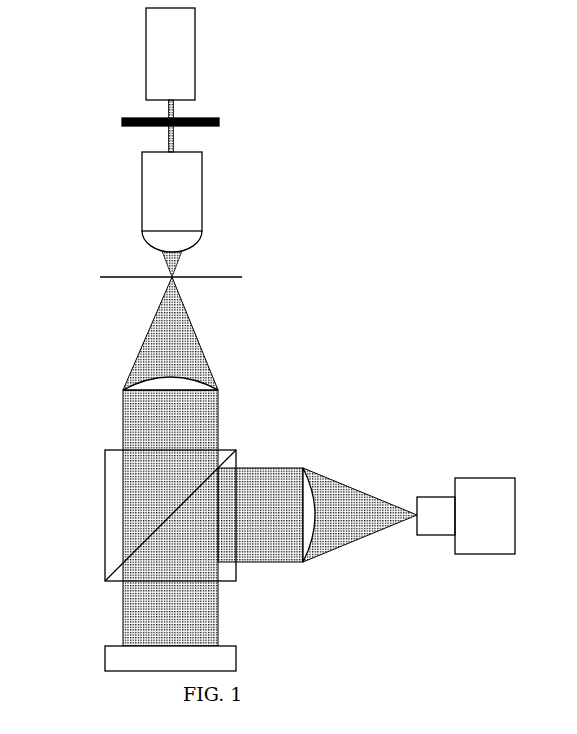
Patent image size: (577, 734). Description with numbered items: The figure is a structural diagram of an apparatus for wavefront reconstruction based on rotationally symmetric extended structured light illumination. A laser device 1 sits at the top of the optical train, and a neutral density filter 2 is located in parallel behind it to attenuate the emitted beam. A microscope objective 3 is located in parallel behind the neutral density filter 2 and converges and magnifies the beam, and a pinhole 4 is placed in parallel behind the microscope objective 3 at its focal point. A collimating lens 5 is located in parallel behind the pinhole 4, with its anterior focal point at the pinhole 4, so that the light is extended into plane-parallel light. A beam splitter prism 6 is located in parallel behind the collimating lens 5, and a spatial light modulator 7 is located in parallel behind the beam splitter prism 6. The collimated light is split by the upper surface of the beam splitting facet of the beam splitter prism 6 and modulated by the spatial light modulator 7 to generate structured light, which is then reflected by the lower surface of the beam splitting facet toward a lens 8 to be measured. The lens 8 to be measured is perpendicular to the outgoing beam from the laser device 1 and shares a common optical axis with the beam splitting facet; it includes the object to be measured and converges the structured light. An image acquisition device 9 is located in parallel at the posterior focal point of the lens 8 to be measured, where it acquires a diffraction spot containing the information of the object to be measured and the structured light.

The laser device 1 is at (128, 54).
The neutral density filter 2 is at (235, 124).
The microscope objective 3 is at (130, 186).
The pinhole 4 is at (255, 280).
The collimating lens 5 is at (92, 378).
The beam splitter prism 6 is at (85, 506).
The spatial light modulator 7 is at (98, 658).
The lens to be measured 8 is at (304, 467).
The image acquisition device 9 is at (438, 572).